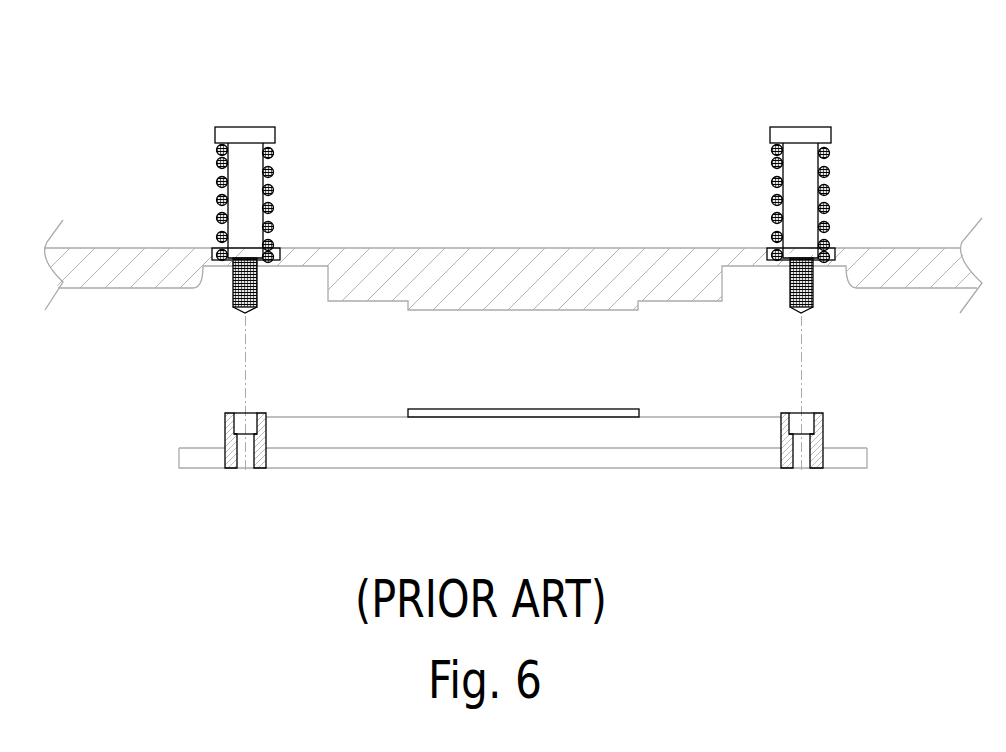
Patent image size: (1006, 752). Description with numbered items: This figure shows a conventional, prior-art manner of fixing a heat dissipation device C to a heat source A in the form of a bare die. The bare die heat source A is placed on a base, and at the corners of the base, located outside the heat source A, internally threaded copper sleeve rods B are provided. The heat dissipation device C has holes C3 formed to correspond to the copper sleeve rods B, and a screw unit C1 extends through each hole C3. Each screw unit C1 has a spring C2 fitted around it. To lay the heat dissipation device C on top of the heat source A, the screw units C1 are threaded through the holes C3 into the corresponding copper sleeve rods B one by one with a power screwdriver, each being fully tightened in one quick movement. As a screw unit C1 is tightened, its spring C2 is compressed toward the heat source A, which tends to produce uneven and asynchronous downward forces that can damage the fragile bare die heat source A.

The heat source A is at (444, 413).
The copper sleeve rod B is at (228, 433).
The heat dissipation device C is at (165, 253).
The screw unit C1 is at (229, 140).
The spring C2 is at (273, 152).
The hole C3 is at (212, 272).